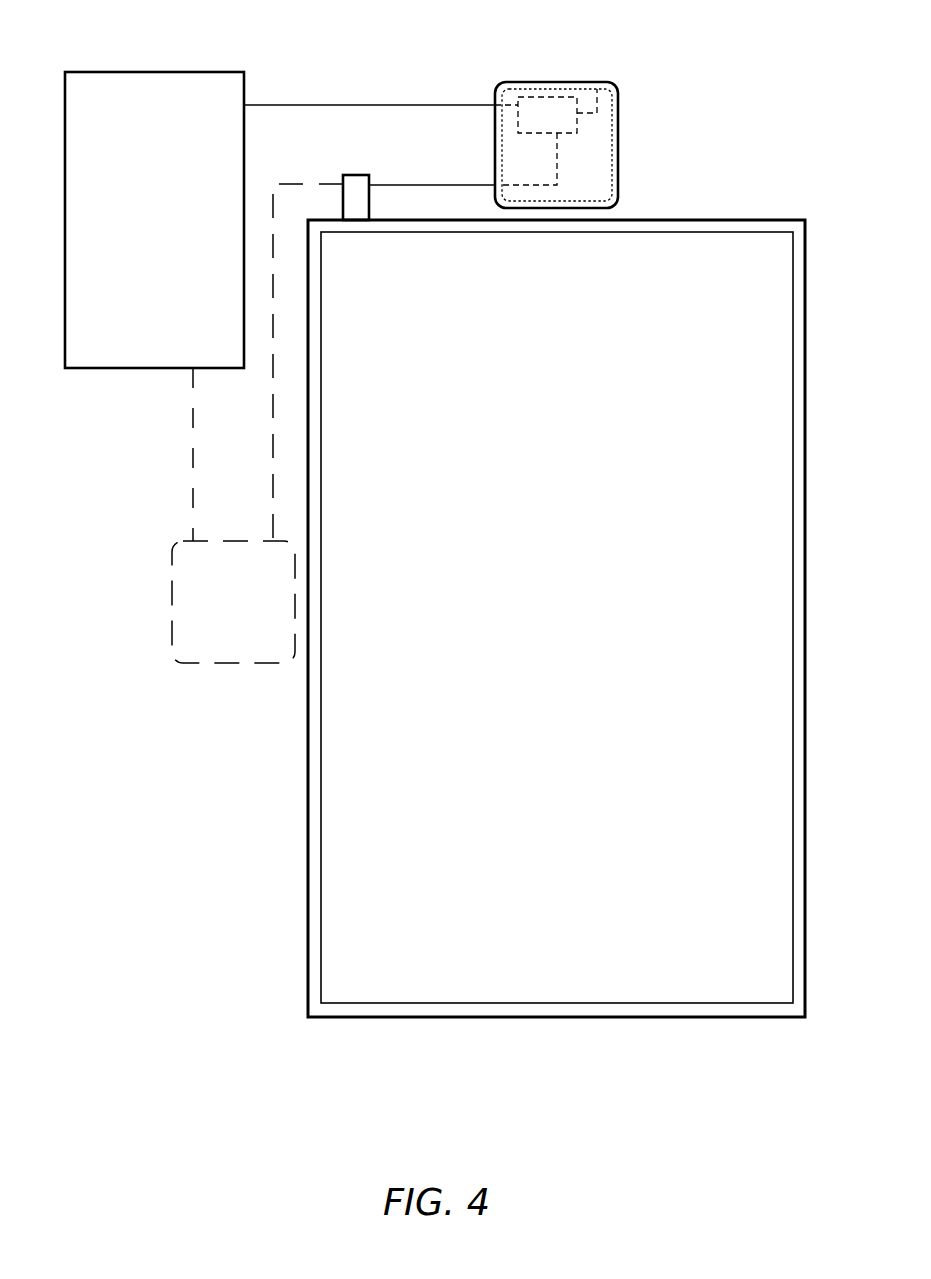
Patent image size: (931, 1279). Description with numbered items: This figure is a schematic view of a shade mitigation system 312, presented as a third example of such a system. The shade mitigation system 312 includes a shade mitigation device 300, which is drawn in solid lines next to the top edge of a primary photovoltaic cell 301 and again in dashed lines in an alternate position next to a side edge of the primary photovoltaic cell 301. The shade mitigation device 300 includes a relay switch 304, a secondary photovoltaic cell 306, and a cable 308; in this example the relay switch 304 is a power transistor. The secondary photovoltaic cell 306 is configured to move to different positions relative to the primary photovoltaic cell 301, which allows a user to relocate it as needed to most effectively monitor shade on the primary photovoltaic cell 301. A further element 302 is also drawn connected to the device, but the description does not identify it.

The shade mitigation device 300 is at (391, 333).
The primary photovoltaic cell 301 is at (740, 220).
The control unit 302 is at (178, 72).
The relay switch 304 is at (530, 136).
The secondary photovoltaic cell 306 is at (604, 190).
The cable 308 is at (587, 118).
The shade mitigation system 312 is at (621, 60).